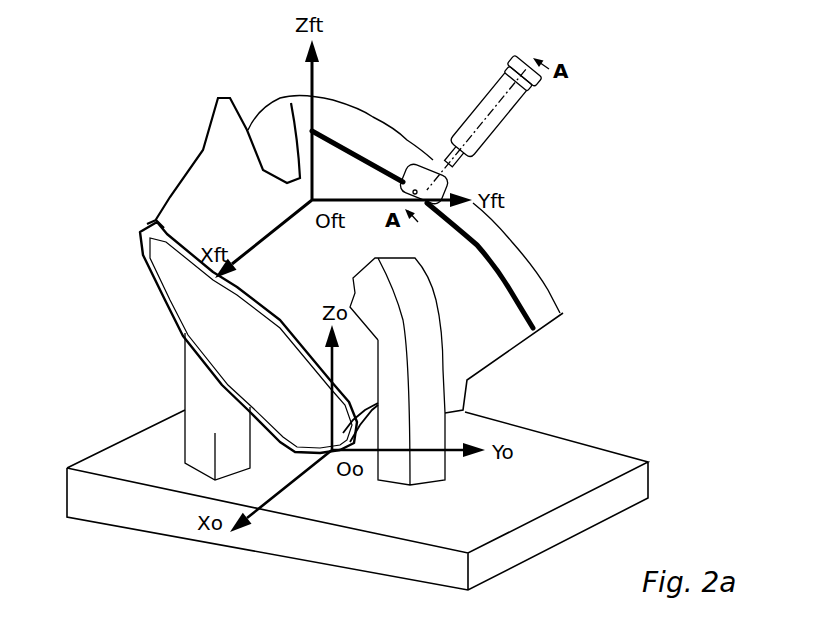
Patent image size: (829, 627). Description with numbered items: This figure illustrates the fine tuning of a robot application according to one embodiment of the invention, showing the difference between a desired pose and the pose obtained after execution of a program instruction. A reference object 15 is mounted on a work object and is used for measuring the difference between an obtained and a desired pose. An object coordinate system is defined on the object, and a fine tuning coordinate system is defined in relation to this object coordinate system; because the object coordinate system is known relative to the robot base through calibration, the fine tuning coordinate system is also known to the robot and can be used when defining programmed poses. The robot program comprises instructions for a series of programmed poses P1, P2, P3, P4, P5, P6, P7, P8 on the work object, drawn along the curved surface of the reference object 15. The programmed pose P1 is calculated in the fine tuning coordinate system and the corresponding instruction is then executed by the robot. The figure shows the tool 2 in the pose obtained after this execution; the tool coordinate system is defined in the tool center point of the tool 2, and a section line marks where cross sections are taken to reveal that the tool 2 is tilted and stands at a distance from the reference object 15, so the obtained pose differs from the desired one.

The tool 2 is at (457, 180).
The reference object 15 is at (483, 337).
The programmed pose P1 is at (308, 130).
The programmed pose P2 is at (333, 138).
The programmed pose P3 is at (363, 153).
The programmed pose P4 is at (403, 175).
The programmed pose P5 is at (443, 182).
The programmed pose P6 is at (487, 237).
The programmed pose P7 is at (508, 283).
The programmed pose P8 is at (533, 327).